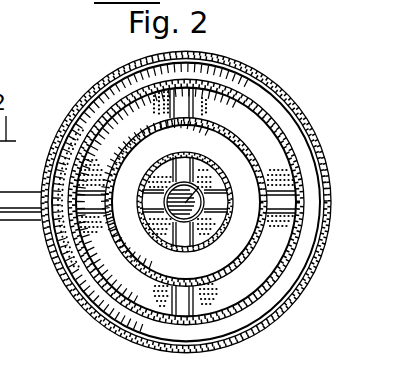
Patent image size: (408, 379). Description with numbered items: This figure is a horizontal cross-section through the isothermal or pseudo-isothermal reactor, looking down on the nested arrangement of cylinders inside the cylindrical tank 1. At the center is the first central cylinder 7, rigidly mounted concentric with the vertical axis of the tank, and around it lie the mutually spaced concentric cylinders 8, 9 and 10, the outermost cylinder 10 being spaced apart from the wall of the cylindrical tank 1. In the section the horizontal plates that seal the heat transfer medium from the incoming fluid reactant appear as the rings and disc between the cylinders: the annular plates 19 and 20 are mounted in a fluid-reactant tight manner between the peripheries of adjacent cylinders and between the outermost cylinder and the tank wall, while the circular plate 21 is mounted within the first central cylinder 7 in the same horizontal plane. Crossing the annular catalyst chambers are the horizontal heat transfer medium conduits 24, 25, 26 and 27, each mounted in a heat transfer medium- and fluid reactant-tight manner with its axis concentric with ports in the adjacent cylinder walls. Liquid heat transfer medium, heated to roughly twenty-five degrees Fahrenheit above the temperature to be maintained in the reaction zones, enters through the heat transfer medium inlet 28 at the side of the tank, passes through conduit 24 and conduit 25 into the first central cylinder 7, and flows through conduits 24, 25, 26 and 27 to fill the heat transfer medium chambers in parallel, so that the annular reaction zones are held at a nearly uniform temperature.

The cylindrical tank 1 is at (277, 83).
The first central cylinder 7 is at (167, 162).
The cylinder 8 is at (168, 160).
The cylinder 9 is at (209, 106).
The outermost cylinder 10 is at (229, 109).
The annular plate 19 is at (114, 158).
The annular plate 20 is at (100, 107).
The circular plate 21 is at (230, 145).
The heat transfer medium conduit 24 is at (89, 226).
The heat transfer medium conduit 25 is at (158, 231).
The heat transfer medium conduit 26 is at (216, 199).
The heat transfer medium conduit 27 is at (262, 221).
The heat transfer medium inlet 28 is at (22, 221).